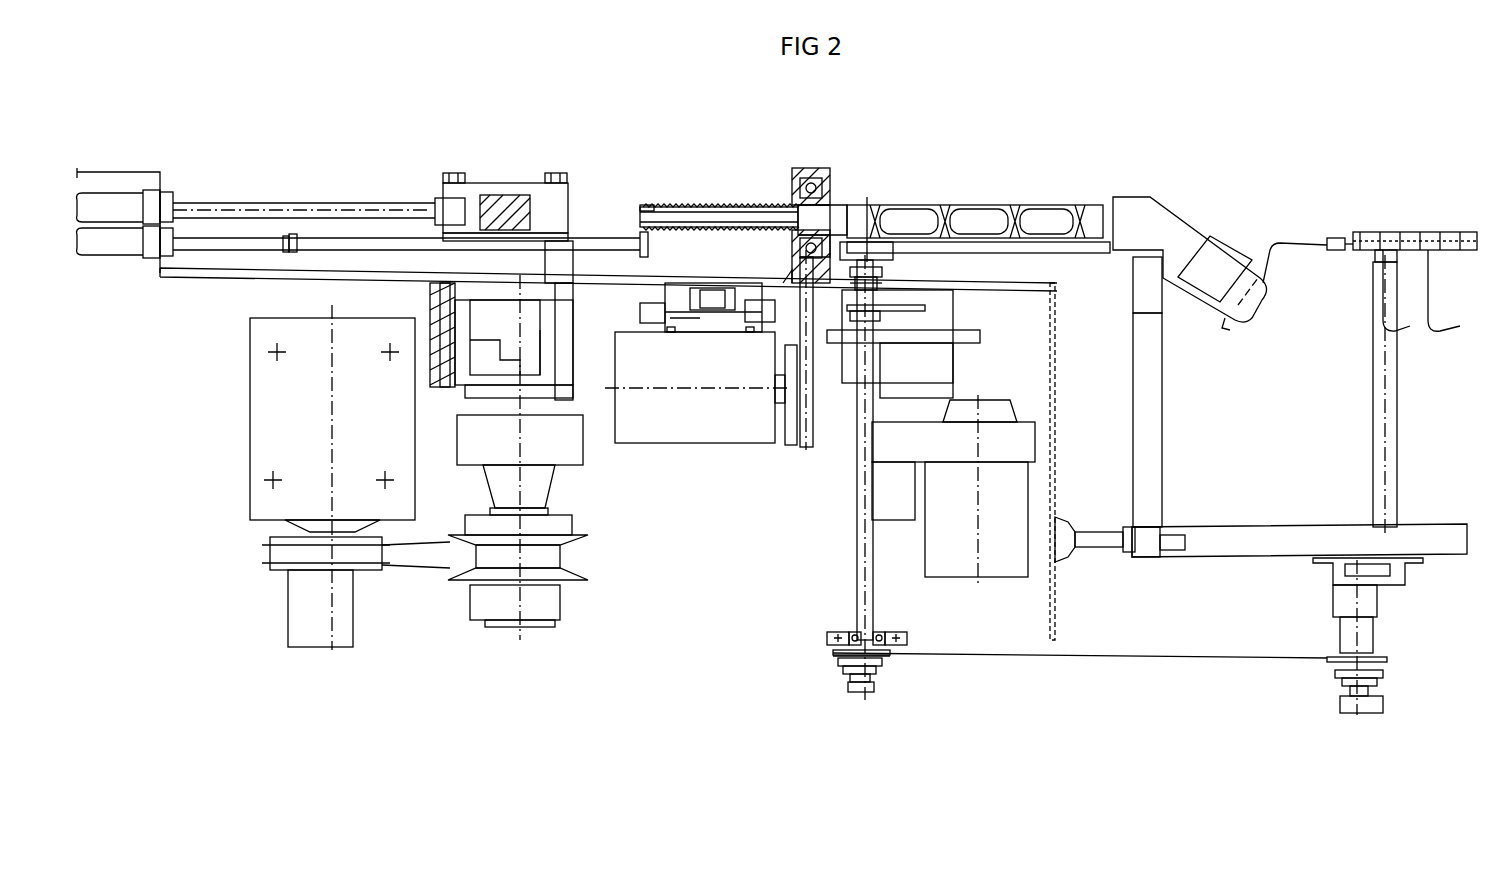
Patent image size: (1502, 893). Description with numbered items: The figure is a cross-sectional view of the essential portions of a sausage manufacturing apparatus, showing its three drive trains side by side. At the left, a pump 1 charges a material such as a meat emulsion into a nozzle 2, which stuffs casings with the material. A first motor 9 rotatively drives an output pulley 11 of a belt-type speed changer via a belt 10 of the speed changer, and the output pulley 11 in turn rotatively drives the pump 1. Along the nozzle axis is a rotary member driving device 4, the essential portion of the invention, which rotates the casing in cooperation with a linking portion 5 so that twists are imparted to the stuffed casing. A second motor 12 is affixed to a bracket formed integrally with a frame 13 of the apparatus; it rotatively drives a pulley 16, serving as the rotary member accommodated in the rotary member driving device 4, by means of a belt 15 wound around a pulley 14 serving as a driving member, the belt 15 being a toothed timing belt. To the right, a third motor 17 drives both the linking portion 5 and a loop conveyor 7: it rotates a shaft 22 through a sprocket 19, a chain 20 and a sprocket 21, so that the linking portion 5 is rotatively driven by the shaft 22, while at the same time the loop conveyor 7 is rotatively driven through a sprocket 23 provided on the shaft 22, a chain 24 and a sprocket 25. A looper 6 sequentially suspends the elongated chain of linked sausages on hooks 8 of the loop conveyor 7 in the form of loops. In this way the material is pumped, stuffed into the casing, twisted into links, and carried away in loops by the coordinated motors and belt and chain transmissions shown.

The pump 1 is at (505, 185).
The nozzle 2 is at (606, 207).
The rotary member driving device 4 is at (814, 170).
The linking portion 5 is at (1006, 205).
The looper 6 is at (1172, 228).
The loop conveyor 7 is at (1394, 225).
The hooks 8 is at (1305, 242).
The first motor 9 is at (272, 430).
The belt 10 is at (415, 557).
The output pulley 11 is at (565, 542).
The second motor 12 is at (672, 433).
The frame 13 is at (690, 280).
The pulley 14 is at (797, 440).
The belt 15 is at (812, 345).
The pulley 16 is at (835, 185).
The third motor 17 is at (952, 565).
The sprocket 19 is at (905, 310).
The chain 20 is at (920, 305).
The sprocket 21 is at (880, 305).
The shaft 22 is at (855, 590).
The sprocket 23 is at (840, 650).
The chain 24 is at (1075, 657).
The sprocket 25 is at (1322, 656).